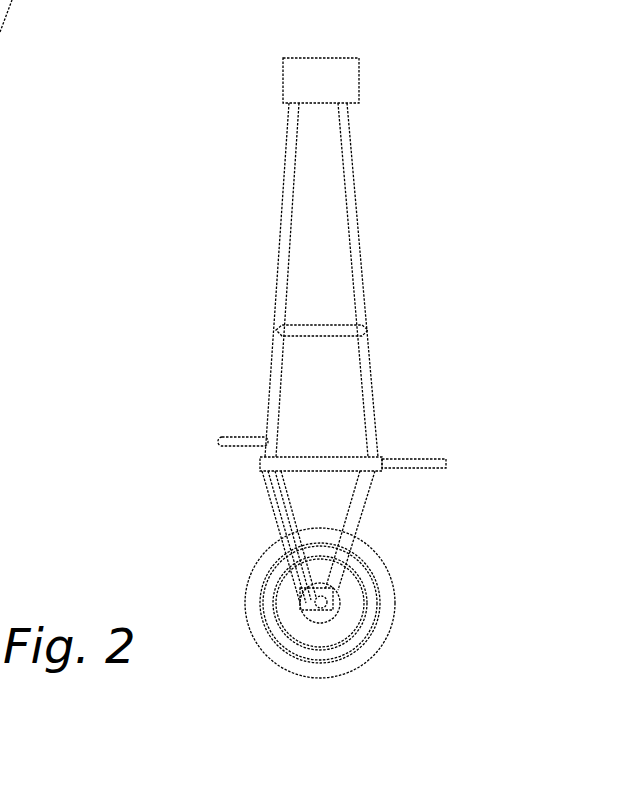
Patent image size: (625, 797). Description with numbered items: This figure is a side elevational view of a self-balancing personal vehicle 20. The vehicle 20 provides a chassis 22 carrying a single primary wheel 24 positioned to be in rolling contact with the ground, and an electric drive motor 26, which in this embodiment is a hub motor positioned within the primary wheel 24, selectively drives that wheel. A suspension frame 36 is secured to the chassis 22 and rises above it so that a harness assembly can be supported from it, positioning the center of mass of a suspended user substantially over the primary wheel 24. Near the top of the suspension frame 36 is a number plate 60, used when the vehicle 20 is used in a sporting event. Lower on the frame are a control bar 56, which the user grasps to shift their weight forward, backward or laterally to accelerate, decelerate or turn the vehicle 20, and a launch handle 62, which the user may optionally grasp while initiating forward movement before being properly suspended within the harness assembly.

The self-balancing personal vehicle 20 is at (414, 92).
The chassis 22 is at (246, 526).
The primary wheel 24 is at (386, 594).
The electric drive motor 26 is at (300, 623).
The suspension frame 36 is at (350, 196).
The control bar 56 is at (430, 466).
The number plate 60 is at (313, 58).
The launch handle 62 is at (245, 443).